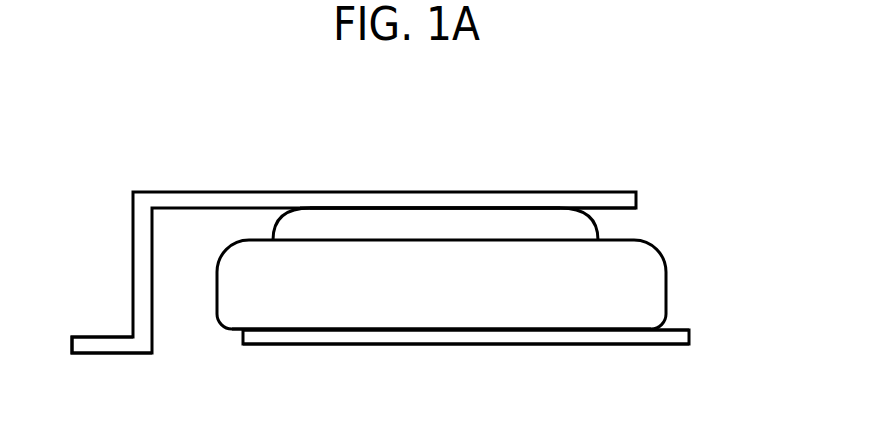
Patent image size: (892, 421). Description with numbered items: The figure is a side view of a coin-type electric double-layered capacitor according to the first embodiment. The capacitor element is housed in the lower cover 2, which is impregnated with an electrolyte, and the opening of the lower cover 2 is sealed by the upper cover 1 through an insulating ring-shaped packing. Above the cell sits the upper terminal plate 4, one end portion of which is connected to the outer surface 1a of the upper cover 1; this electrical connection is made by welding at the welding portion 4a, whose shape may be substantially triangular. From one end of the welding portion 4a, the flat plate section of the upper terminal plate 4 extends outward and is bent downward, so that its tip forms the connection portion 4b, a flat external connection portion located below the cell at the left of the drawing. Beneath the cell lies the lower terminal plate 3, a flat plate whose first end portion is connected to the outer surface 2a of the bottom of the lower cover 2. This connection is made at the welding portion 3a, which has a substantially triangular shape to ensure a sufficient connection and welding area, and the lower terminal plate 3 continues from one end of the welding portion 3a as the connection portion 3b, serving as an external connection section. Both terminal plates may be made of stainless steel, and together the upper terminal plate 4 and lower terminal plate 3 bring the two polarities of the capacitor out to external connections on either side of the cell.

The upper cover 1 is at (398, 230).
The outer surface of upper cover 1a is at (465, 208).
The lower cover 2 is at (645, 290).
The outer surface of lower cover 2a is at (573, 332).
The lower terminal plate 3 is at (297, 335).
The welding portion of lower terminal plate 3a is at (510, 332).
The connection portion of lower terminal plate 3b is at (672, 338).
The upper terminal plate 4 is at (217, 200).
The welding portion of upper terminal plate 4a is at (524, 208).
The connection portion of upper terminal plate 4b is at (114, 344).